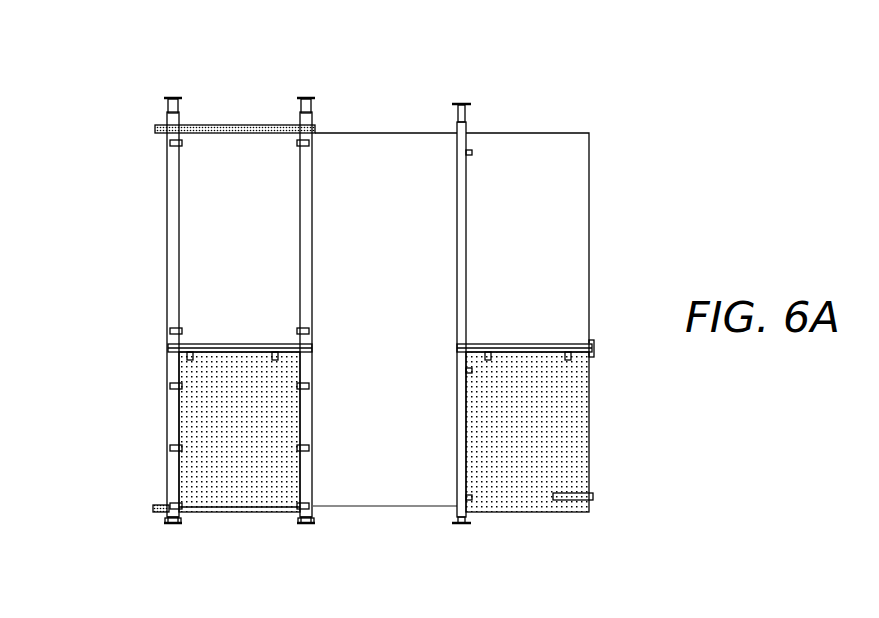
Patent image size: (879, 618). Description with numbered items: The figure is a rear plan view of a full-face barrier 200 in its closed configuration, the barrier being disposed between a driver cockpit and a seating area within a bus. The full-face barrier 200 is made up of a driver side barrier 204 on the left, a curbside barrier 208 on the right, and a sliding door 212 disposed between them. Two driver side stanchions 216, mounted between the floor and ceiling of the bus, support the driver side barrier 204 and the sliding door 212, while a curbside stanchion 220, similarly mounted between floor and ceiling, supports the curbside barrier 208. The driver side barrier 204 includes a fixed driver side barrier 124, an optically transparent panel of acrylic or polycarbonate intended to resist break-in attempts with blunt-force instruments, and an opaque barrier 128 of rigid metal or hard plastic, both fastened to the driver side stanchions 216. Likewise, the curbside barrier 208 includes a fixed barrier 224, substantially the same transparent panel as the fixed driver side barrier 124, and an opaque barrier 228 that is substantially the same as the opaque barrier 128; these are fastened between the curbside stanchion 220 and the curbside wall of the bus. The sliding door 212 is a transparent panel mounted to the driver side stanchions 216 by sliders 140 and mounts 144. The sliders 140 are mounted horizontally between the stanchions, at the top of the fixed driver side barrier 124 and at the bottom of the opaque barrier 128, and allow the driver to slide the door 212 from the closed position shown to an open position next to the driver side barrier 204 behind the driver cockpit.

The full-face barrier 200 is at (351, 78).
The driver side barrier 204 is at (150, 292).
The curbside barrier 208 is at (600, 247).
The sliders 140 is at (228, 128).
The mounts 144 is at (337, 136).
The fixed driver side barrier 124 is at (232, 217).
The opaque barrier 128 is at (232, 393).
The driver side stanchions 216 is at (300, 522).
The sliding door 212 is at (397, 450).
The curbside stanchion 220 is at (461, 103).
The fixed barrier 224 is at (530, 183).
The opaque barrier 228 is at (530, 417).